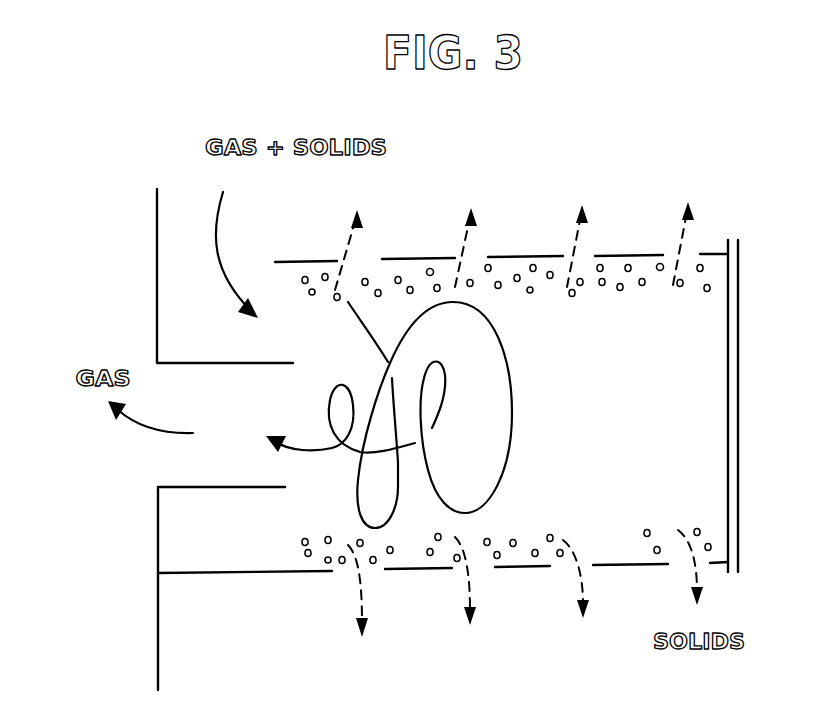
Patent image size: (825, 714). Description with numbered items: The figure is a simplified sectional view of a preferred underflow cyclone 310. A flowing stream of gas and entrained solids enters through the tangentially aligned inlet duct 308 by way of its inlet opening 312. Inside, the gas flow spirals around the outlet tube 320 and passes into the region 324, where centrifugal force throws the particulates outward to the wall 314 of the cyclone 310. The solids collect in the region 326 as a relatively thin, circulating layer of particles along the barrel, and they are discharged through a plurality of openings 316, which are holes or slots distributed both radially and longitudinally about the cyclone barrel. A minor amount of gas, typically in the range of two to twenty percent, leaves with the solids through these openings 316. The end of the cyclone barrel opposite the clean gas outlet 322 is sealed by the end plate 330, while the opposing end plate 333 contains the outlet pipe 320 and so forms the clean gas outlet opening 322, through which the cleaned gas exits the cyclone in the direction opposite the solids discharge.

The inlet duct 308 is at (157, 238).
The cyclone 310 is at (230, 573).
The inlet opening 312 is at (270, 252).
The wall 314 is at (402, 257).
The openings 316 is at (480, 253).
The outlet tube 320 is at (198, 362).
The clean gas outlet 322 is at (292, 397).
The region 324 is at (642, 425).
The region 326 is at (636, 556).
The end plate 330 is at (738, 401).
The opposing end plate 333 is at (158, 533).